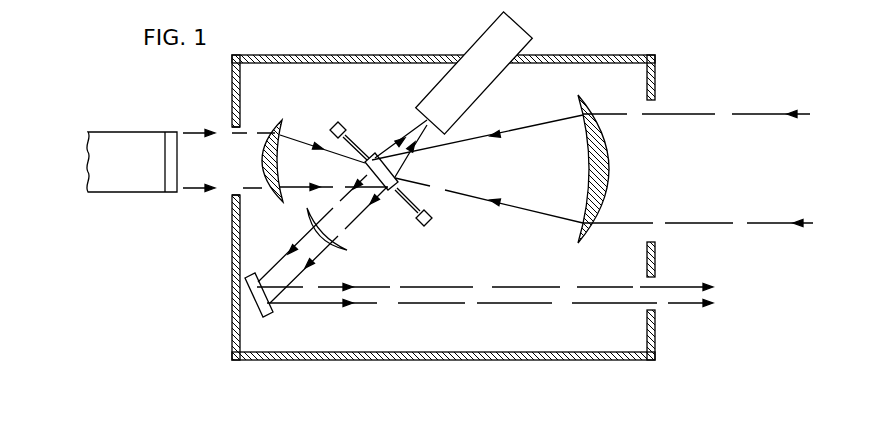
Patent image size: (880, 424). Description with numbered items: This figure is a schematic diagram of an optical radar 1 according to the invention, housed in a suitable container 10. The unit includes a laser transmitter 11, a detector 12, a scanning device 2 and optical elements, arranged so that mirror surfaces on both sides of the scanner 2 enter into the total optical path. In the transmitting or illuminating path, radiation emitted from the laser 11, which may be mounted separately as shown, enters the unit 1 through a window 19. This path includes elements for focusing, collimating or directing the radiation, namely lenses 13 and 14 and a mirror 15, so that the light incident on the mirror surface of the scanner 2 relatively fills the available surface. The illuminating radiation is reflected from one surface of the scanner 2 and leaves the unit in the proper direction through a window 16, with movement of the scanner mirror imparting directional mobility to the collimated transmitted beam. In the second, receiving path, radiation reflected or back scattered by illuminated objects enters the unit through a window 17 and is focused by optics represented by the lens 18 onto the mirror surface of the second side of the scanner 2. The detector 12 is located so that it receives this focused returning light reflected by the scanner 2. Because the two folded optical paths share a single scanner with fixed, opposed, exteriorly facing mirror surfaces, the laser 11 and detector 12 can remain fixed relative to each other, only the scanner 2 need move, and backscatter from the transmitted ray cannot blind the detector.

The optical radar 1 is at (207, 246).
The scanning device 2 is at (408, 175).
The container 10 is at (346, 361).
The laser transmitter 11 is at (117, 132).
The detector 12 is at (483, 34).
The lens 13 is at (262, 163).
The lens 14 is at (346, 243).
The mirror 15 is at (262, 316).
The window 16 is at (652, 311).
The window 17 is at (652, 243).
The lens 18 is at (610, 163).
The window 19 is at (230, 197).